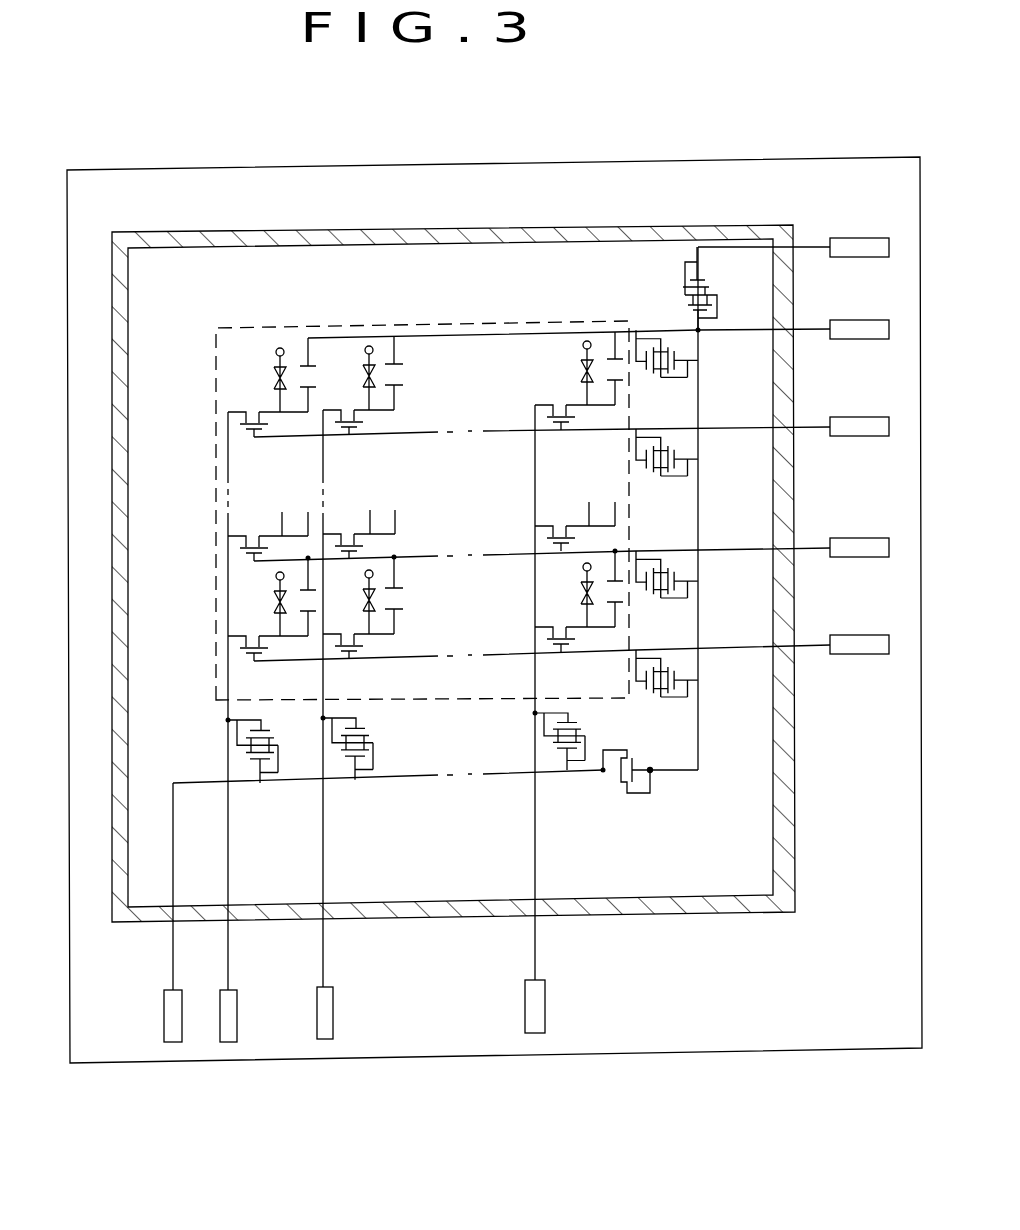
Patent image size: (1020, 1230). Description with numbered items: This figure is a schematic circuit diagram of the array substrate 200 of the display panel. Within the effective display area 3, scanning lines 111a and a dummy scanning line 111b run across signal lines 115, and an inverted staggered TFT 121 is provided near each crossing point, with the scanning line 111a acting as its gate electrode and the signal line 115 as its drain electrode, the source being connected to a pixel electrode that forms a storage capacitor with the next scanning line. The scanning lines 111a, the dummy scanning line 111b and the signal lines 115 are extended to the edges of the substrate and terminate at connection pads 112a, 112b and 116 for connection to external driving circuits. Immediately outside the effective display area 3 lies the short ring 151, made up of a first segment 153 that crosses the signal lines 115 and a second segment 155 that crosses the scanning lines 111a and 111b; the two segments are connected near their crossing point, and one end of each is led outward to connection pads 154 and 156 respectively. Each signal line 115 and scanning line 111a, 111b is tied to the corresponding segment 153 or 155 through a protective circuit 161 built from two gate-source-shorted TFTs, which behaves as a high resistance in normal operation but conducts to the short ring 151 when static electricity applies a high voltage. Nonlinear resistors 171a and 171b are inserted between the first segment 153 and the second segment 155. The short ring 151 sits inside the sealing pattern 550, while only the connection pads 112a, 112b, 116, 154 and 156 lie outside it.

The effective display area 3 is at (282, 326).
The scanning line 111a is at (468, 437).
The dummy scanning line 111b is at (468, 333).
The connection pad 112a is at (860, 436).
The connection pad 112b is at (860, 339).
The signal line 115 is at (226, 692).
The connection pad 116 is at (218, 1013).
The TFT 121 is at (256, 655).
The short ring 151 is at (687, 777).
The first segment 153 is at (478, 775).
The connection pad 154 is at (164, 1012).
The second segment 155 is at (698, 722).
The connection pad 156 is at (858, 258).
The protective circuit 161 is at (668, 392).
The nonlinear resistor 171a is at (635, 796).
The nonlinear resistor 171b is at (683, 279).
The substrate 200 is at (686, 1050).
The sealing pattern 550 is at (795, 866).